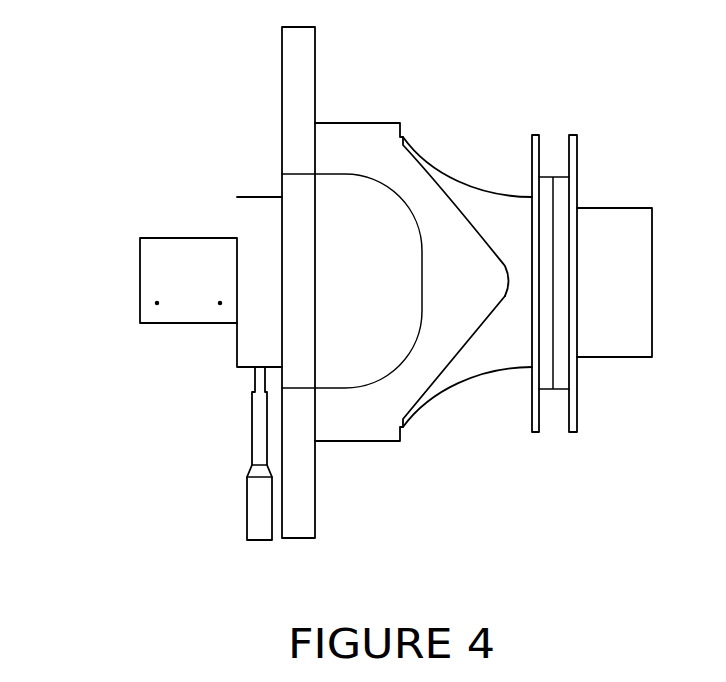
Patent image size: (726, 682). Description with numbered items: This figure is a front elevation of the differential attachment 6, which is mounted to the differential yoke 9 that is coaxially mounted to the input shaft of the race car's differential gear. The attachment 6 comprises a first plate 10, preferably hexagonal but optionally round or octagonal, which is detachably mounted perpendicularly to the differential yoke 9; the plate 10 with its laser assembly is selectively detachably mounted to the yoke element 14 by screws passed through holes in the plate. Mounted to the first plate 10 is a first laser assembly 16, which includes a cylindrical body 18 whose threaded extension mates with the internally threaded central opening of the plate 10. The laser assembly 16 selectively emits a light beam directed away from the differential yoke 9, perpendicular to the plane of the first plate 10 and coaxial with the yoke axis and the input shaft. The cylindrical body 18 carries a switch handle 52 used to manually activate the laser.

The first plate 10 is at (282, 79).
The yoke element 14 is at (362, 136).
The differential attachment 6 is at (371, 475).
The differential yoke 9 is at (465, 382).
The first laser assembly 16 is at (188, 312).
The cylindrical body 18 is at (248, 345).
The switch handle 52 is at (257, 519).